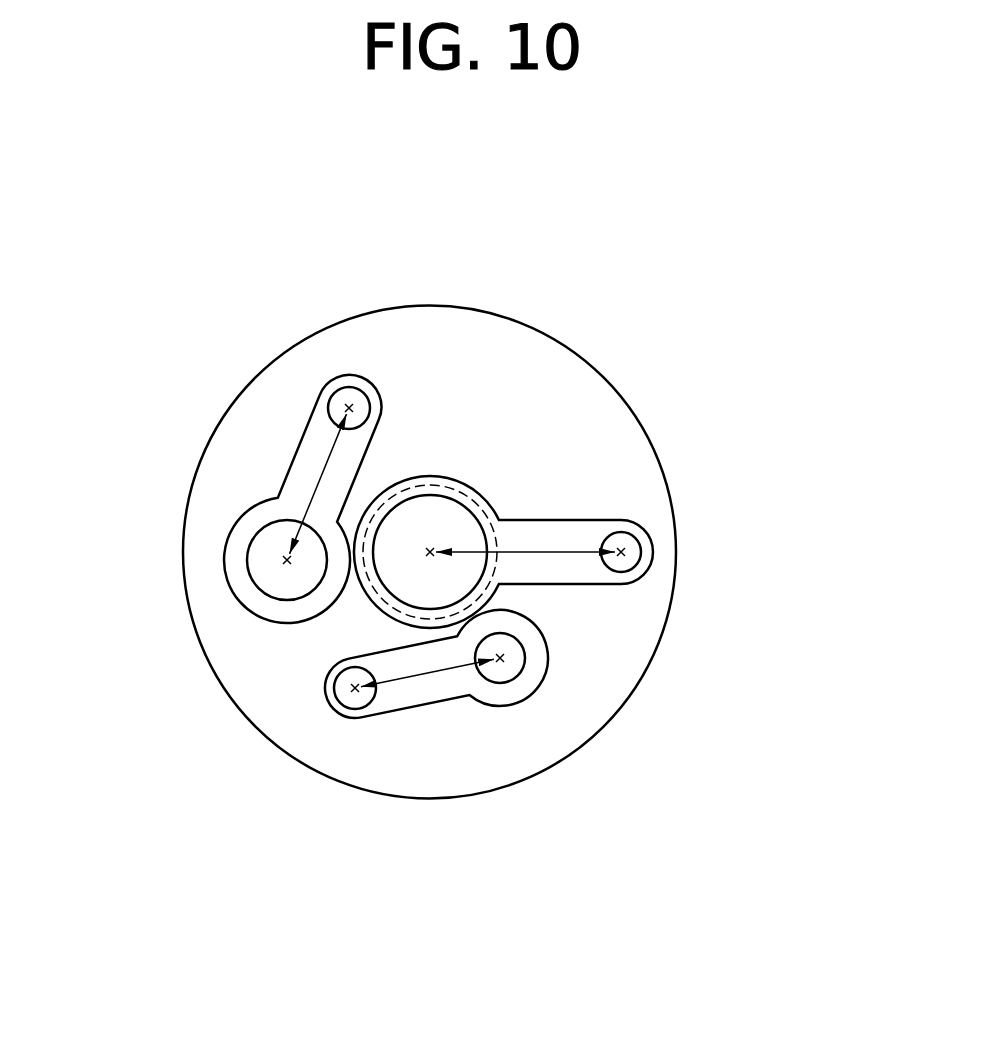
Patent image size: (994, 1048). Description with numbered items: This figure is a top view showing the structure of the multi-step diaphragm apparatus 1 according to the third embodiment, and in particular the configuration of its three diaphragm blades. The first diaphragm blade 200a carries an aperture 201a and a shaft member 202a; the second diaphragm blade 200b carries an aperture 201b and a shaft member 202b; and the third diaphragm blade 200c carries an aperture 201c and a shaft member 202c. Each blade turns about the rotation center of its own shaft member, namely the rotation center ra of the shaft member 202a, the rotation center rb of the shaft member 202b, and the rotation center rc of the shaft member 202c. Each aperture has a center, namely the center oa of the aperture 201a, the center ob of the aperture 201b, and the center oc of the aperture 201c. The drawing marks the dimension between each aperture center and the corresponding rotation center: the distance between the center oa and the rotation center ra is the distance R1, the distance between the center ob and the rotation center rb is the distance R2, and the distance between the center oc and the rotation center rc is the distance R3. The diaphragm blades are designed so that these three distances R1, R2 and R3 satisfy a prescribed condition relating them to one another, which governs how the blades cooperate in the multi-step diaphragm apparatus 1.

The multi-step diaphragm apparatus 1 is at (820, 272).
The first diaphragm blade 200a is at (587, 520).
The second diaphragm blade 200b is at (297, 450).
The third diaphragm blade 200c is at (367, 792).
The aperture 201a is at (448, 487).
The aperture 201b is at (263, 547).
The aperture 201c is at (507, 673).
The shaft member 202a is at (635, 555).
The shaft member 202b is at (338, 405).
The shaft member 202c is at (338, 690).
The distance R1 is at (528, 547).
The distance R2 is at (317, 487).
The distance R3 is at (440, 672).
The rotation center ra is at (624, 548).
The rotation center rb is at (343, 407).
The rotation center rc is at (357, 697).
The center oa is at (428, 555).
The center ob is at (287, 560).
The center oc is at (503, 657).